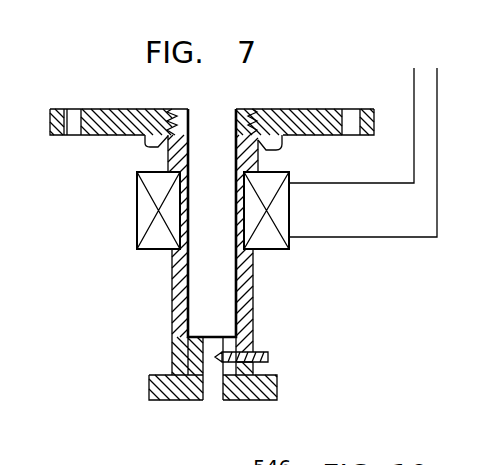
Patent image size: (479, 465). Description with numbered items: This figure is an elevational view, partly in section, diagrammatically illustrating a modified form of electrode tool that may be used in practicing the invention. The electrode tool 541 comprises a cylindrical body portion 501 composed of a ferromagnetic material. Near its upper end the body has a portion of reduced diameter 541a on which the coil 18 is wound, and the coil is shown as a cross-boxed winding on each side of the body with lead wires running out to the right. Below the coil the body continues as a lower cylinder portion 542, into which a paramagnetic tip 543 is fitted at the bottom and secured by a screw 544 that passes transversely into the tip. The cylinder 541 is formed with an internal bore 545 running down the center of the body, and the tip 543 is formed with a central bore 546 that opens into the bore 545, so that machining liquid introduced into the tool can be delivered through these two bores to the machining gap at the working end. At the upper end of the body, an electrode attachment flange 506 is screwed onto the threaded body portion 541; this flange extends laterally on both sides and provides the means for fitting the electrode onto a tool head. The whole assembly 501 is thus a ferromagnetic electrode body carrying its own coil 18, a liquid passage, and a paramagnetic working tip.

The electrode attachment flange 506 is at (327, 110).
The portion of reduced diameter 541a is at (184, 175).
The coil 18 is at (137, 204).
The lower cylinder portion 542 is at (172, 305).
The electrode tool 541 is at (268, 262).
The internal bore 545 is at (236, 292).
The cylindrical body portion 501 is at (268, 313).
The screw 544 is at (268, 355).
The paramagnetic tip 543 is at (277, 385).
The central bore 546 is at (213, 395).